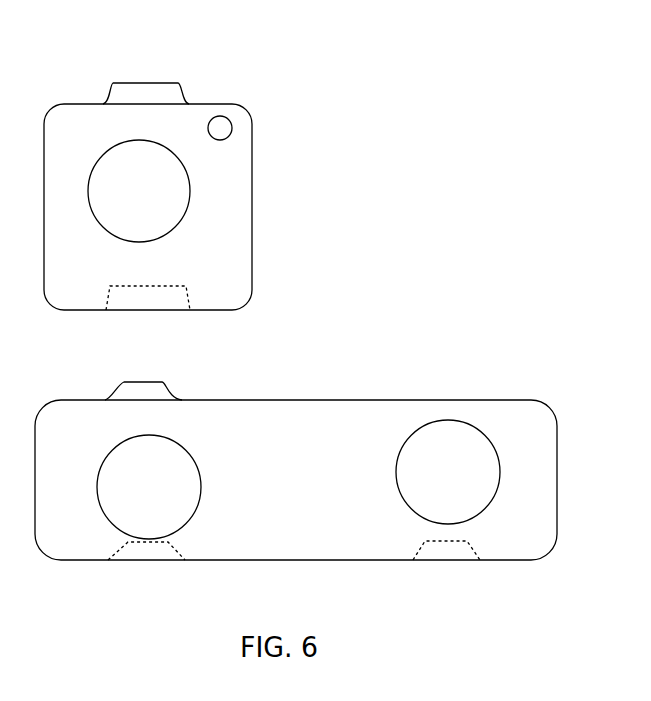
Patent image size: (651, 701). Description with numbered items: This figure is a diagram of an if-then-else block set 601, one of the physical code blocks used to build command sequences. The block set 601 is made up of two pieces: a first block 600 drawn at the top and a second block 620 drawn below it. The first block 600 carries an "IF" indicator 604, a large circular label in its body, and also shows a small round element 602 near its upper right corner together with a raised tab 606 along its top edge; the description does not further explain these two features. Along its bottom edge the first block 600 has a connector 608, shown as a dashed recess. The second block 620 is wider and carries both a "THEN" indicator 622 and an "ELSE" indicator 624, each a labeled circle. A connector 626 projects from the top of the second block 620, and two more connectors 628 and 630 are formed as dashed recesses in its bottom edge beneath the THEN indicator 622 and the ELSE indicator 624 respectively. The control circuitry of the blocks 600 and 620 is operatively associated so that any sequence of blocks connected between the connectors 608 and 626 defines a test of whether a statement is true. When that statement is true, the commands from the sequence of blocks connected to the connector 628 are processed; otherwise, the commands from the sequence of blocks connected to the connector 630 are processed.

The first block 600 is at (244, 170).
The if-then-else block set 601 is at (528, 125).
The indicator 602 is at (232, 126).
The IF indicator 604 is at (155, 242).
The top connector tab 606 is at (172, 83).
The connector 608 is at (173, 293).
The second block 620 is at (530, 400).
The THEN indicator 622 is at (202, 487).
The ELSE indicator 624 is at (400, 456).
The connector 626 is at (126, 381).
The connector 628 is at (170, 551).
The connector 630 is at (416, 556).